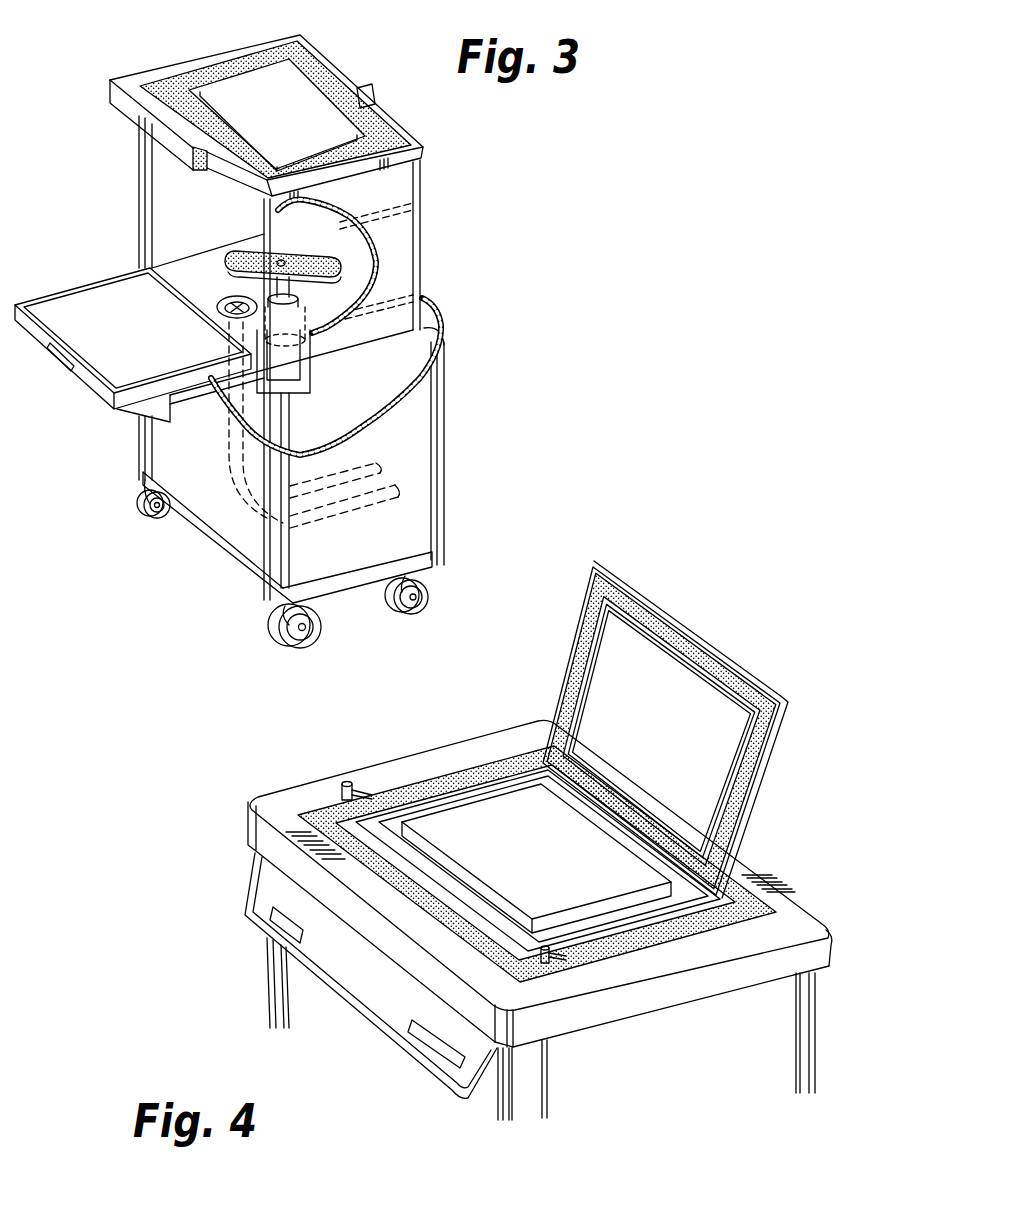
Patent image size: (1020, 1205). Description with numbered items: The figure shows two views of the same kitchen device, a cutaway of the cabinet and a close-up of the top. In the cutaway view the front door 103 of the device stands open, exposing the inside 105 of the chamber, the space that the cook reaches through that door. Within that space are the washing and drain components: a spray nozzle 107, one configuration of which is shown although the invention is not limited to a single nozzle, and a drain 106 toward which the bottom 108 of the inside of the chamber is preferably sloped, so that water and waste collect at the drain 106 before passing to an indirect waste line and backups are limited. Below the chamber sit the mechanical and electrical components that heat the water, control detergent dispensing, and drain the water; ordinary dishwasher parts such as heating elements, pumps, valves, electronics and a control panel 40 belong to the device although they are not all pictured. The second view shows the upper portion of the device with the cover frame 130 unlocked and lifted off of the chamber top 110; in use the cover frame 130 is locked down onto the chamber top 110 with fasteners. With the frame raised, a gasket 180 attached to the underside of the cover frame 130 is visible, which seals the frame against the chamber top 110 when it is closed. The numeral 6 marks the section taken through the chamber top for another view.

In FIG. 3, the section line for FIG. 6 is at (150, 32).
In FIG. 3, the front door 103 is at (86, 303).
In FIG. 3, the inside of the chamber 105 is at (166, 196).
In FIG. 3, the drain 106 is at (224, 303).
In FIG. 3, the spray nozzle 107 is at (330, 250).
In FIG. 3, the bottom of the inside of the chamber 108 is at (343, 300).
In FIG. 4, the control panel 40 is at (350, 987).
In FIG. 4, the chamber top 110 is at (504, 782).
In FIG. 4, the cover frame 130 is at (703, 622).
In FIG. 4, the gasket 180 is at (578, 642).